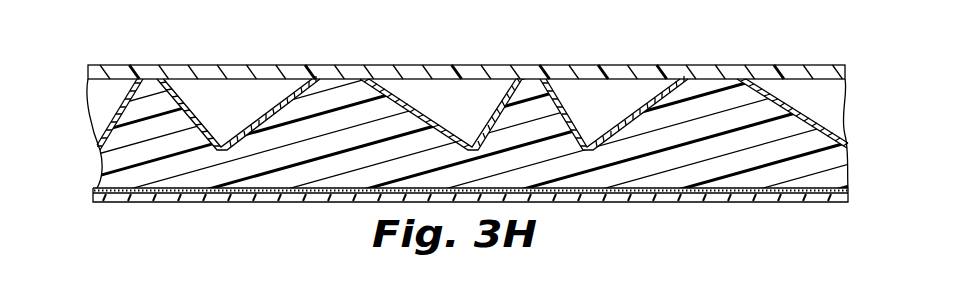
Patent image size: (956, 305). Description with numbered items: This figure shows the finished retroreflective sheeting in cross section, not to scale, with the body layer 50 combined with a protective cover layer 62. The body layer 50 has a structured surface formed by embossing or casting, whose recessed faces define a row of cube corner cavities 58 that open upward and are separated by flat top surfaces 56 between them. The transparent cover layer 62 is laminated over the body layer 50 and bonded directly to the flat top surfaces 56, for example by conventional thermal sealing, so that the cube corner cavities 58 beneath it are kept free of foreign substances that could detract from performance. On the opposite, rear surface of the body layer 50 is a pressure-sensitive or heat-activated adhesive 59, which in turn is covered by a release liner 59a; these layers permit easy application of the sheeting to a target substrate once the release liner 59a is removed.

The body layer 50 is at (668, 190).
The flat top surfaces 56 is at (158, 67).
The cube corner cavities 58 is at (236, 94).
The adhesive 59 is at (98, 193).
The release liner 59a is at (127, 203).
The cover layer 62 is at (90, 68).